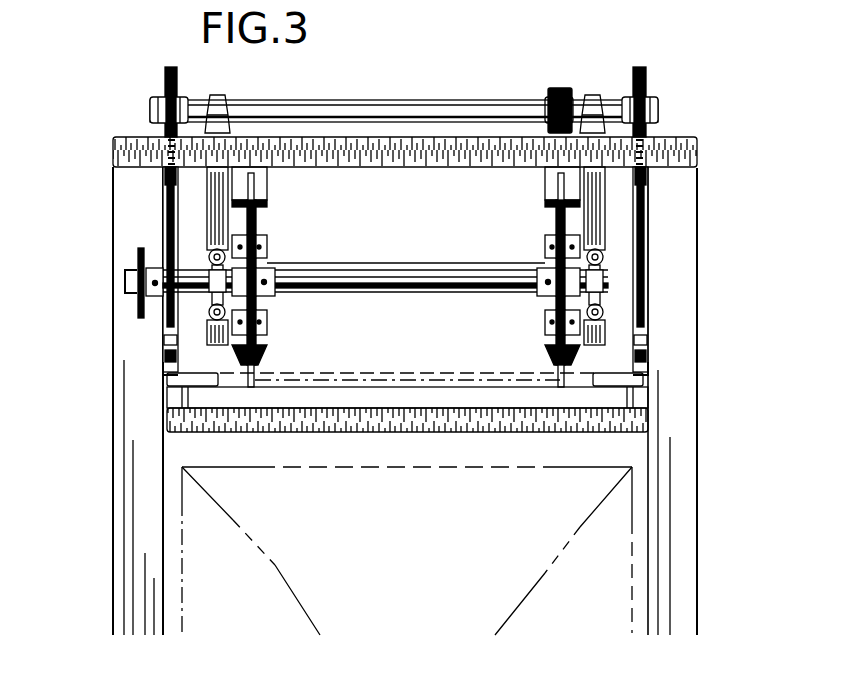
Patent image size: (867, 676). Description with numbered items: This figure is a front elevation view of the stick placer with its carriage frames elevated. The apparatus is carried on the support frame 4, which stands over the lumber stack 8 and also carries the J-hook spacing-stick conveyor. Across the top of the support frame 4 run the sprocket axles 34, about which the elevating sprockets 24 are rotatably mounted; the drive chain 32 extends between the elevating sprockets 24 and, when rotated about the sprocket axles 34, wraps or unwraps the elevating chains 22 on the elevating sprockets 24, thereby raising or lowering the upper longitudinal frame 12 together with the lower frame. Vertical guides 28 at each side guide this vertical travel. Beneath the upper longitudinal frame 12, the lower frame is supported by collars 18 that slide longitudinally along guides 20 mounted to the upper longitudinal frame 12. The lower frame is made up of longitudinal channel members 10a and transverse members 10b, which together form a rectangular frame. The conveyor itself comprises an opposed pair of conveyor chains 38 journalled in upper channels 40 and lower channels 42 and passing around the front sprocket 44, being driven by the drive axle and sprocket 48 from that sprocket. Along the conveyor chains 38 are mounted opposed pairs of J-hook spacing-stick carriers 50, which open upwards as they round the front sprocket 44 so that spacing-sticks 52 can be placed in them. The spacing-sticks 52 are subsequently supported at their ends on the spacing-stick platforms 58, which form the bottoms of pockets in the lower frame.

The support frame 4 is at (133, 140).
The lumber stack 8 is at (480, 565).
The longitudinal channel members 10a is at (165, 405).
The transverse members 10b is at (440, 432).
The upper longitudinal frame 12 is at (648, 320).
The collars 18 is at (165, 358).
The guides 20 is at (165, 342).
The elevating chains 22 is at (178, 150).
The elevating sprockets 24 is at (165, 72).
The vertical guides 28 is at (160, 237).
The drive chain 32 is at (562, 90).
The sprocket axles 34 is at (385, 100).
The conveyor chains 38 is at (547, 235).
The upper channels 40 is at (165, 184).
The lower channels 42 is at (268, 350).
The front sprocket 44 is at (262, 258).
The drive axle and sprocket 48 is at (125, 285).
The J-hook spacing-stick carriers 50 is at (252, 182).
The spacing-sticks 52 is at (440, 378).
The spacing-stick platforms 58 is at (170, 382).